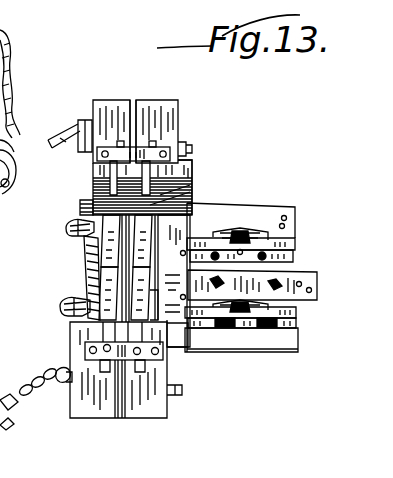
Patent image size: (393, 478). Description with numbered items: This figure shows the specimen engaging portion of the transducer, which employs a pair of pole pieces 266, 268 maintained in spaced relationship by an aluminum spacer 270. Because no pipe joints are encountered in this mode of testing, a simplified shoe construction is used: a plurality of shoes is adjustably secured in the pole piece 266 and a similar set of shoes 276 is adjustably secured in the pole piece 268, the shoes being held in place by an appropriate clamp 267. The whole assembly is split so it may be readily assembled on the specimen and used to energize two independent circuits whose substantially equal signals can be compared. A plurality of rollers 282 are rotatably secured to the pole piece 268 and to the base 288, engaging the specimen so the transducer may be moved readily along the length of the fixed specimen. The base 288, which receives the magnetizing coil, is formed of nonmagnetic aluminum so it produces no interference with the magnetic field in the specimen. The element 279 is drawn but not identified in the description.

The pole piece 266 is at (158, 110).
The clamp 267 is at (140, 156).
The pole piece 268 is at (104, 108).
The aluminum spacer 270 is at (133, 100).
The shoes 276 is at (95, 200).
The side extension 279 is at (193, 200).
The rollers 282 is at (246, 236).
The base 288 is at (281, 340).